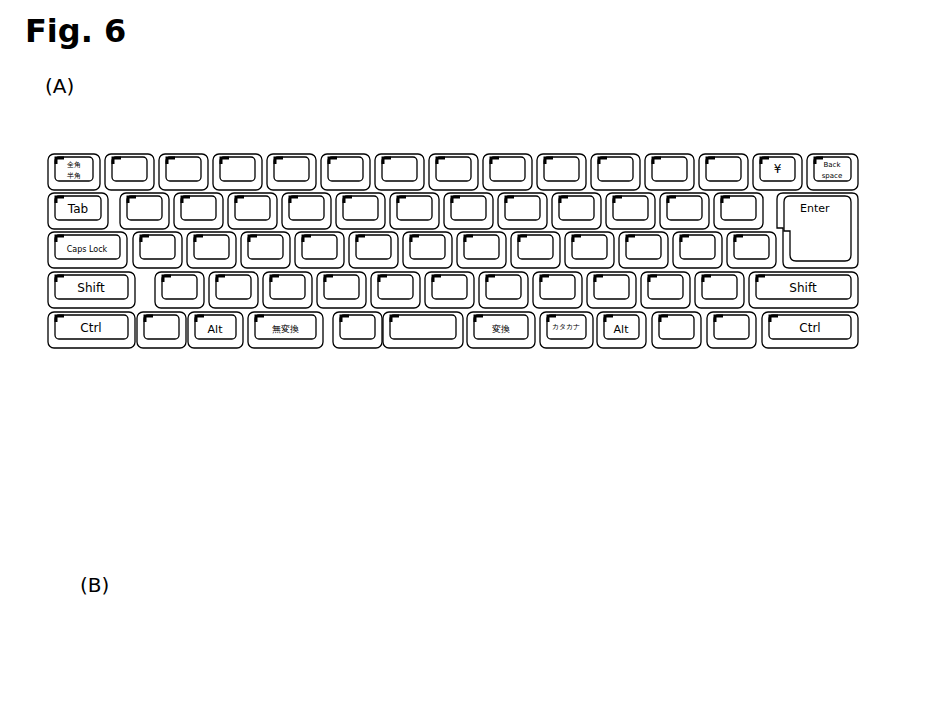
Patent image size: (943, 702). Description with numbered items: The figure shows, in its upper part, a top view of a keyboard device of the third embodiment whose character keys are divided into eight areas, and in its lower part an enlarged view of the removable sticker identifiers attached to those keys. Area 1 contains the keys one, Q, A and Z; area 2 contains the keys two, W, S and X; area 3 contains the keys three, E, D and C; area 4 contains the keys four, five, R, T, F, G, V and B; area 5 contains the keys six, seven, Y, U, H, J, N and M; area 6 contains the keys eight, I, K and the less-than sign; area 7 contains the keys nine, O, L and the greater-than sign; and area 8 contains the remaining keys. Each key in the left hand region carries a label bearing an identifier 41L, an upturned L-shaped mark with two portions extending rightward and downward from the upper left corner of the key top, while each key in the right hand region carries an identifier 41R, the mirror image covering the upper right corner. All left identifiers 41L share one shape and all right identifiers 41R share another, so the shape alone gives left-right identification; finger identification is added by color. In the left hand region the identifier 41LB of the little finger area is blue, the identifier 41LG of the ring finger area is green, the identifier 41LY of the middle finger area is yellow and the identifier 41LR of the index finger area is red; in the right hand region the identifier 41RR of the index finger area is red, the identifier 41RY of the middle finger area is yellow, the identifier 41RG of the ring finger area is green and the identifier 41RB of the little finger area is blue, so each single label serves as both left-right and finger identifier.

The area 1 is at (207, 305).
The area 2 is at (261, 305).
The area 3 is at (316, 305).
The area 4 is at (426, 305).
The area 5 is at (528, 305).
The area 6 is at (582, 305).
The area 7 is at (642, 305).
The area 8 is at (805, 305).
The identifier 41L is at (272, 455).
The identifier 41LB is at (170, 279).
The identifier 41LG is at (220, 279).
The identifier 41LY is at (275, 279).
The identifier 41LR is at (367, 455).
The identifier 41R is at (642, 458).
The identifier 41RR is at (525, 279).
The identifier 41RY is at (580, 279).
The identifier 41RG is at (632, 279).
The identifier 41RB is at (736, 453).